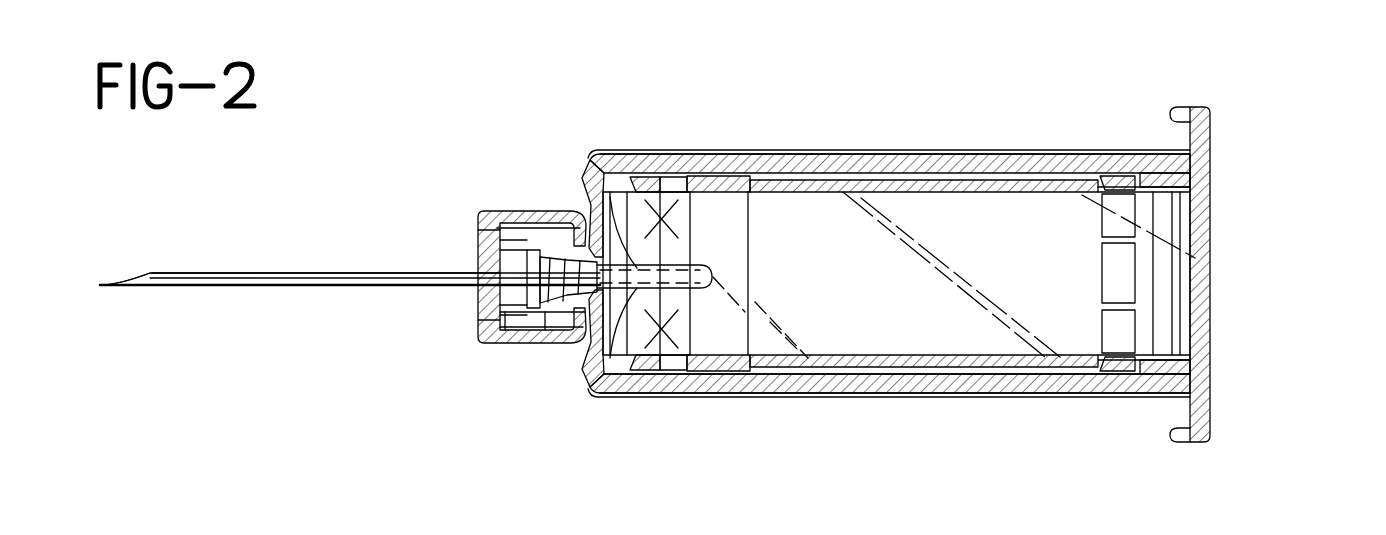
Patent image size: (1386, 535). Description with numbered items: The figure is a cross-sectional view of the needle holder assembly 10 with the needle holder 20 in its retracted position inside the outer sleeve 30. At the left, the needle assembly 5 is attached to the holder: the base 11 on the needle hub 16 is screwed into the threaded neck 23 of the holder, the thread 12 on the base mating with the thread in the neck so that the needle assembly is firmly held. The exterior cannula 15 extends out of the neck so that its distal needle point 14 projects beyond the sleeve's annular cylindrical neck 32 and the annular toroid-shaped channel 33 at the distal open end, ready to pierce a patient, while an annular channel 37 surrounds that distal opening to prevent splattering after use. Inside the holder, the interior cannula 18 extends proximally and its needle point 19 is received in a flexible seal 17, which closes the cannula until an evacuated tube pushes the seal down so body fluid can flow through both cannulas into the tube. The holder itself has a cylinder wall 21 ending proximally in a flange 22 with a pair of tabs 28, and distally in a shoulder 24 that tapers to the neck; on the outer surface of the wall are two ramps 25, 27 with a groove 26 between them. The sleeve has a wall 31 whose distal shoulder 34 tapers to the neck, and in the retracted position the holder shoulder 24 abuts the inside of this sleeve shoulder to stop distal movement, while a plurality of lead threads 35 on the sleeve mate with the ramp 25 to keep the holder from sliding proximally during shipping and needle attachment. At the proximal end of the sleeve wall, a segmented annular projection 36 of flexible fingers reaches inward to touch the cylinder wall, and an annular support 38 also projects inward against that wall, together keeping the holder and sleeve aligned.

The needle assembly 5 is at (278, 300).
The needle holder assembly 10 is at (398, 112).
The base 11 is at (550, 343).
The thread 12 is at (508, 343).
The distal needle point 14 is at (110, 284).
The cannula 15 is at (227, 273).
The needle hub 16 is at (500, 262).
The flexible seal 17 is at (592, 190).
The interior cannula 18 is at (740, 372).
The needle point 19 is at (770, 350).
The needle holder 20 is at (880, 178).
The cylinder wall 21 is at (1045, 185).
The flange 22 is at (1212, 147).
The threaded neck 23 is at (557, 250).
The shoulder 24 is at (578, 365).
The ramp 25 is at (651, 170).
The groove 26 is at (682, 182).
The ramp 27 is at (710, 183).
The tabs 28 is at (1178, 106).
The outer sleeve 30 is at (972, 152).
The wall 31 is at (1018, 382).
The annular cylindrical neck 32 is at (487, 340).
The annular toroid-shaped channel 33 is at (470, 310).
The shoulder 34 is at (565, 215).
The lead threads 35 is at (670, 340).
The segmented annular projection 36 is at (1128, 183).
The annular channel 37 is at (490, 214).
The annular support 38 is at (1185, 165).